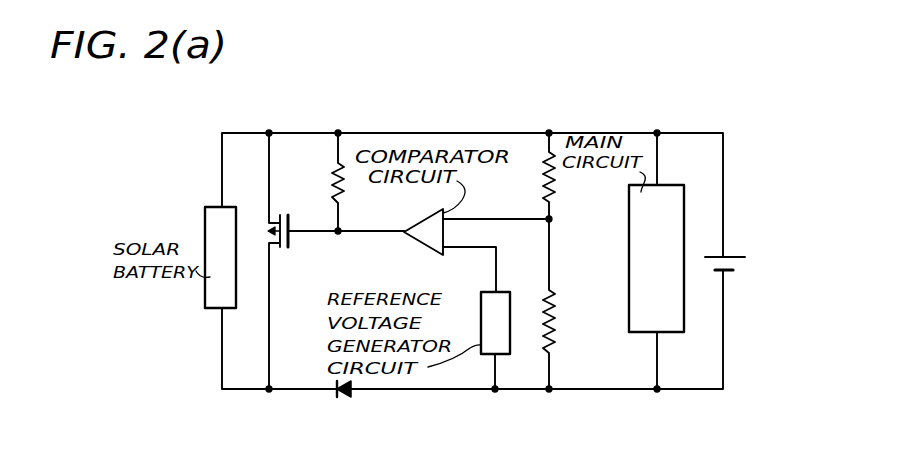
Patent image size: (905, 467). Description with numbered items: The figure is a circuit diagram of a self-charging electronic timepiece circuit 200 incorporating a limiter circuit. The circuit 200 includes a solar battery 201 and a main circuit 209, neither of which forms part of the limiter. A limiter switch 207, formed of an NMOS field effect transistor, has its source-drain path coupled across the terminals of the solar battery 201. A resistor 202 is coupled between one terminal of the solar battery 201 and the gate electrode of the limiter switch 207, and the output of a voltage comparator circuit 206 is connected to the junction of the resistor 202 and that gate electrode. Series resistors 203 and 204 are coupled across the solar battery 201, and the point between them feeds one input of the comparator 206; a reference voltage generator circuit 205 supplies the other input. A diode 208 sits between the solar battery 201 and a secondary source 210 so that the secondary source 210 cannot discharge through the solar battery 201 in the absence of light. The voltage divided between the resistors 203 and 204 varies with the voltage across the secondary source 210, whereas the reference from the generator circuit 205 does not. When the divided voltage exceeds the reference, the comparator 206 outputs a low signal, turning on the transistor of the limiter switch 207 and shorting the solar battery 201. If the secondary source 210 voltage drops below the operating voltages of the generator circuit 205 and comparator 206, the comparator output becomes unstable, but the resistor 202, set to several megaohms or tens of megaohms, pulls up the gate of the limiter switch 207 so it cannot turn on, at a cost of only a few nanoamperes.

The self-charging electronic timepiece circuit 200 is at (317, 398).
The solar battery 201 is at (226, 266).
The resistor 202 is at (334, 190).
The resistor 203 is at (546, 184).
The resistor 204 is at (554, 319).
The reference voltage generator circuit 205 is at (502, 334).
The voltage comparator circuit 206 is at (434, 241).
The limiter switch 207 is at (289, 245).
The diode 208 is at (347, 393).
The main circuit 209 is at (662, 269).
The secondary source 210 is at (729, 265).